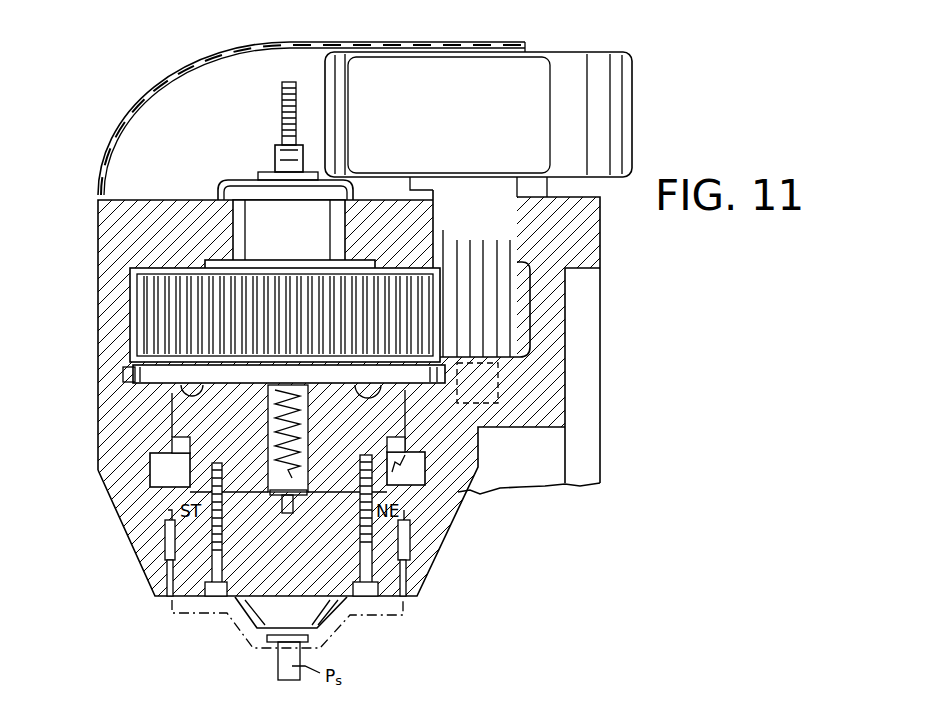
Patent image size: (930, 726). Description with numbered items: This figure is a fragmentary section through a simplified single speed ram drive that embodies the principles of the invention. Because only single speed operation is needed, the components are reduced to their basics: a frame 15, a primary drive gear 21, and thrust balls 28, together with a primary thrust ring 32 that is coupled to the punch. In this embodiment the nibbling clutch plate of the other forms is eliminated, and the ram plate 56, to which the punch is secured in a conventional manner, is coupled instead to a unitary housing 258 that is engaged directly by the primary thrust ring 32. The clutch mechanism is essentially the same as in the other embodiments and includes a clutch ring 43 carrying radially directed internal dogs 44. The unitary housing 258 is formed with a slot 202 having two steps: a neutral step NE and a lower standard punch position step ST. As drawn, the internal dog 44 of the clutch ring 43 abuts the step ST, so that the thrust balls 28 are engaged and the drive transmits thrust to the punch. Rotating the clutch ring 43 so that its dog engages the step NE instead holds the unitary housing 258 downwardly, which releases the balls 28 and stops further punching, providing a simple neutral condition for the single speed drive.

The frame 15 is at (110, 416).
The primary drive gear 21 is at (140, 325).
The thrust balls 28 is at (167, 400).
The primary thrust ring 32 is at (238, 437).
The clutch ring 43 is at (153, 483).
The internal dogs 44 is at (180, 480).
The ram plate 56 is at (268, 608).
The slot 202 is at (392, 470).
The unitary housing 258 is at (322, 553).